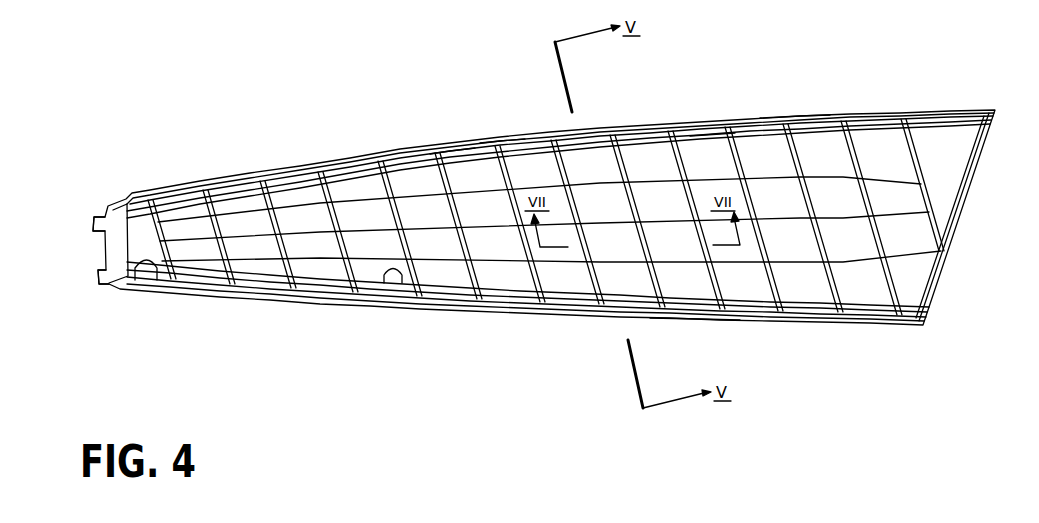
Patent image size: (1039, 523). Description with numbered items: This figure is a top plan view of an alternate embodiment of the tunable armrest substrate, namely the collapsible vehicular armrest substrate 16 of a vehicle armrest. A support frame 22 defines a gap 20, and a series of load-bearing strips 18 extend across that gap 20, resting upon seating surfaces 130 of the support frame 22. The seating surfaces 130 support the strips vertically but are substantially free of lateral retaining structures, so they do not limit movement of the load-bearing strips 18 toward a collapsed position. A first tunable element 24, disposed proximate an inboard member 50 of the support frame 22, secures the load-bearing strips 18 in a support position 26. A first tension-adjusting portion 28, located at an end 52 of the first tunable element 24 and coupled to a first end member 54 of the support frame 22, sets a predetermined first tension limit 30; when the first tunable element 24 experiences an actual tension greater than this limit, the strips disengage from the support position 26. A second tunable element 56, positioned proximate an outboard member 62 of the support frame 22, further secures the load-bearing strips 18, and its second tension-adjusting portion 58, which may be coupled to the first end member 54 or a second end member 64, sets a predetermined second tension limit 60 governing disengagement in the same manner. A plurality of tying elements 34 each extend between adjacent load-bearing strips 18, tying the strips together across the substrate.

The collapsible vehicular armrest substrate 16 is at (176, 118).
The load-bearing strips 18 is at (622, 170).
The gap 20 is at (690, 284).
The support frame 22 is at (789, 100).
The first tunable element 24 is at (402, 283).
The support position 26 is at (274, 152).
The first tension-adjusting portion 28 is at (93, 288).
The predetermined first tension limit 30 is at (313, 282).
The tying elements 34 is at (408, 190).
The inboard member 50 is at (770, 317).
The end 52 is at (157, 282).
The first end member 54 is at (115, 248).
The second tunable element 56 is at (712, 145).
The second tension-adjusting portion 58 is at (88, 228).
The predetermined second tension limit 60 is at (286, 187).
The outboard member 62 is at (500, 140).
The second end member 64 is at (968, 180).
The seating surfaces 130 is at (453, 145).